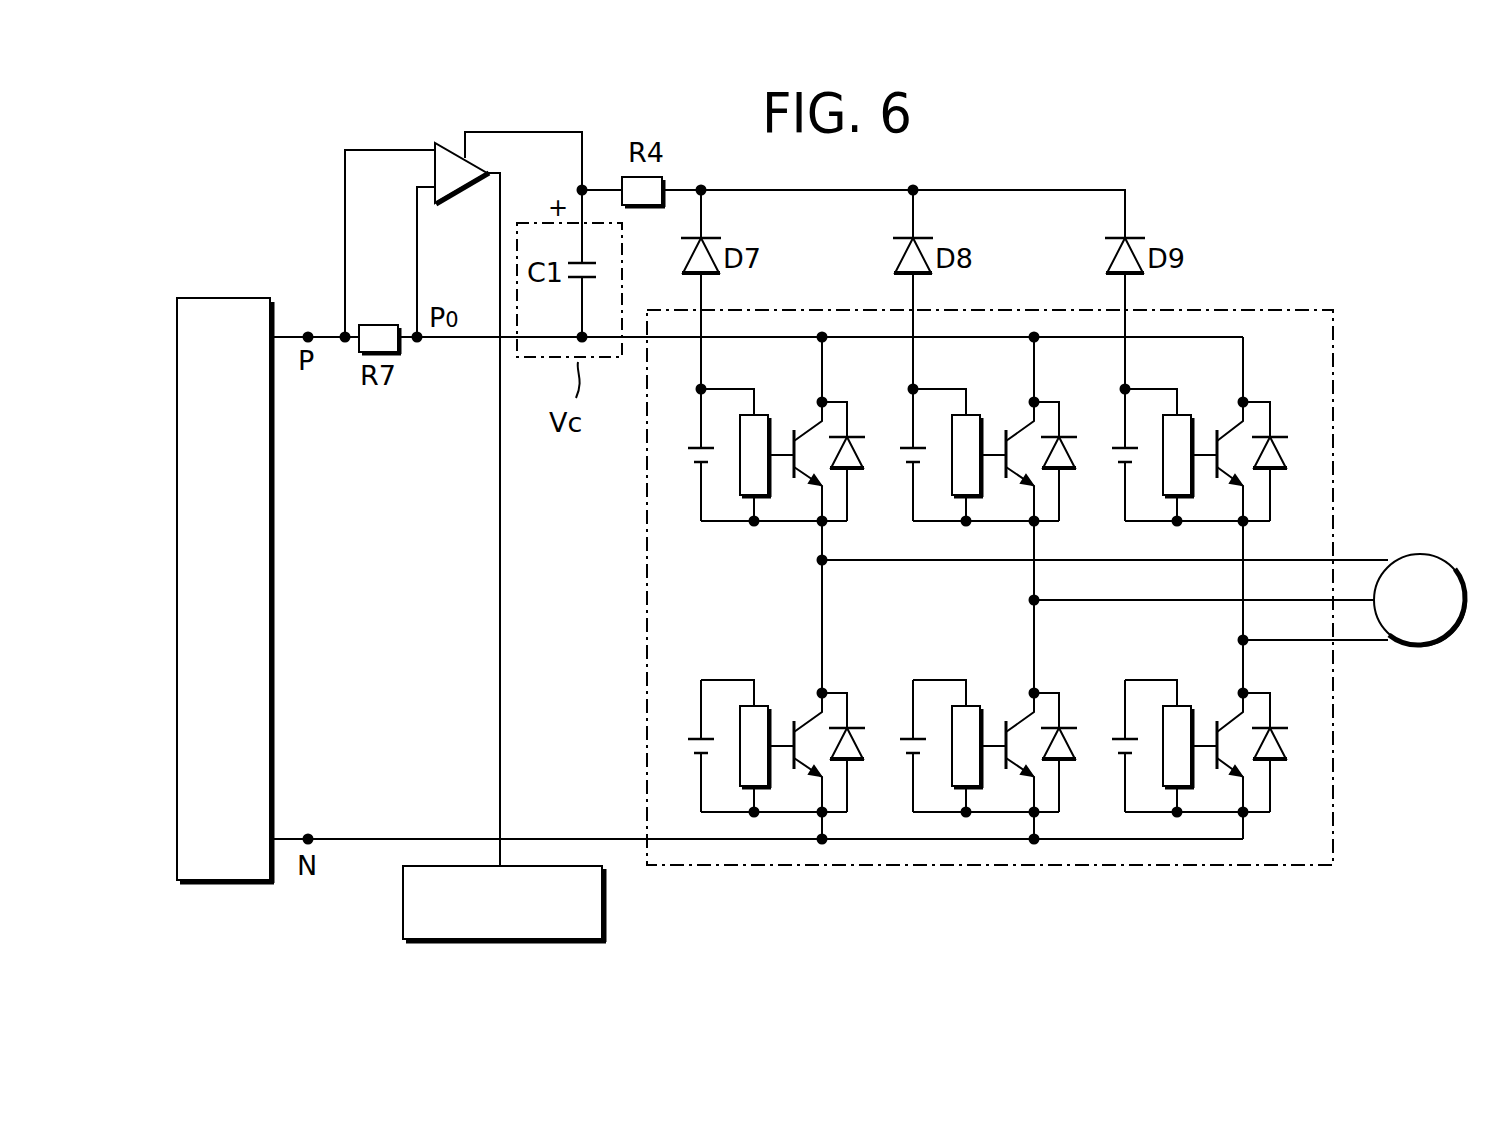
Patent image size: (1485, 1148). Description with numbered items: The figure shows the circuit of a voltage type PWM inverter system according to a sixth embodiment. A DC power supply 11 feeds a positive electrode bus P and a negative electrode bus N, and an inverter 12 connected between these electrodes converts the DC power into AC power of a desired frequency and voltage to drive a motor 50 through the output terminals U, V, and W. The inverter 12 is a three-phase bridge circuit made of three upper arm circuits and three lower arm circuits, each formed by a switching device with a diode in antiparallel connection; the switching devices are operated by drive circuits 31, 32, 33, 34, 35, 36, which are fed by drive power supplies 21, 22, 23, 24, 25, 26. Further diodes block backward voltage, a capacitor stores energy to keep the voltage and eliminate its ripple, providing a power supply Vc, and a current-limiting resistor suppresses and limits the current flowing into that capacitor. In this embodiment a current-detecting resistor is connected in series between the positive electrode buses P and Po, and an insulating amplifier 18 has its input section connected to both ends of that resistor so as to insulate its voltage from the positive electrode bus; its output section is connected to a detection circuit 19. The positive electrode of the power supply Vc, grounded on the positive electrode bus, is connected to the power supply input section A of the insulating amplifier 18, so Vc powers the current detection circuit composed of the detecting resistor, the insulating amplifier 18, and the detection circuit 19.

The DC power supply 11 is at (240, 297).
The inverter 12 is at (1244, 305).
The insulating amplifier 18 is at (444, 195).
The detection circuit 19 is at (604, 908).
The drive power supply 21 is at (697, 454).
The drive power supply 22 is at (904, 453).
The drive power supply 23 is at (1115, 453).
The drive power supply 24 is at (693, 742).
The drive power supply 25 is at (905, 742).
The drive power supply 26 is at (1116, 742).
The drive circuit 31 is at (758, 413).
The drive circuit 32 is at (973, 425).
The drive circuit 33 is at (1184, 425).
The drive circuit 34 is at (761, 716).
The drive circuit 35 is at (973, 716).
The drive circuit 36 is at (1184, 716).
The motor 50 is at (1441, 556).